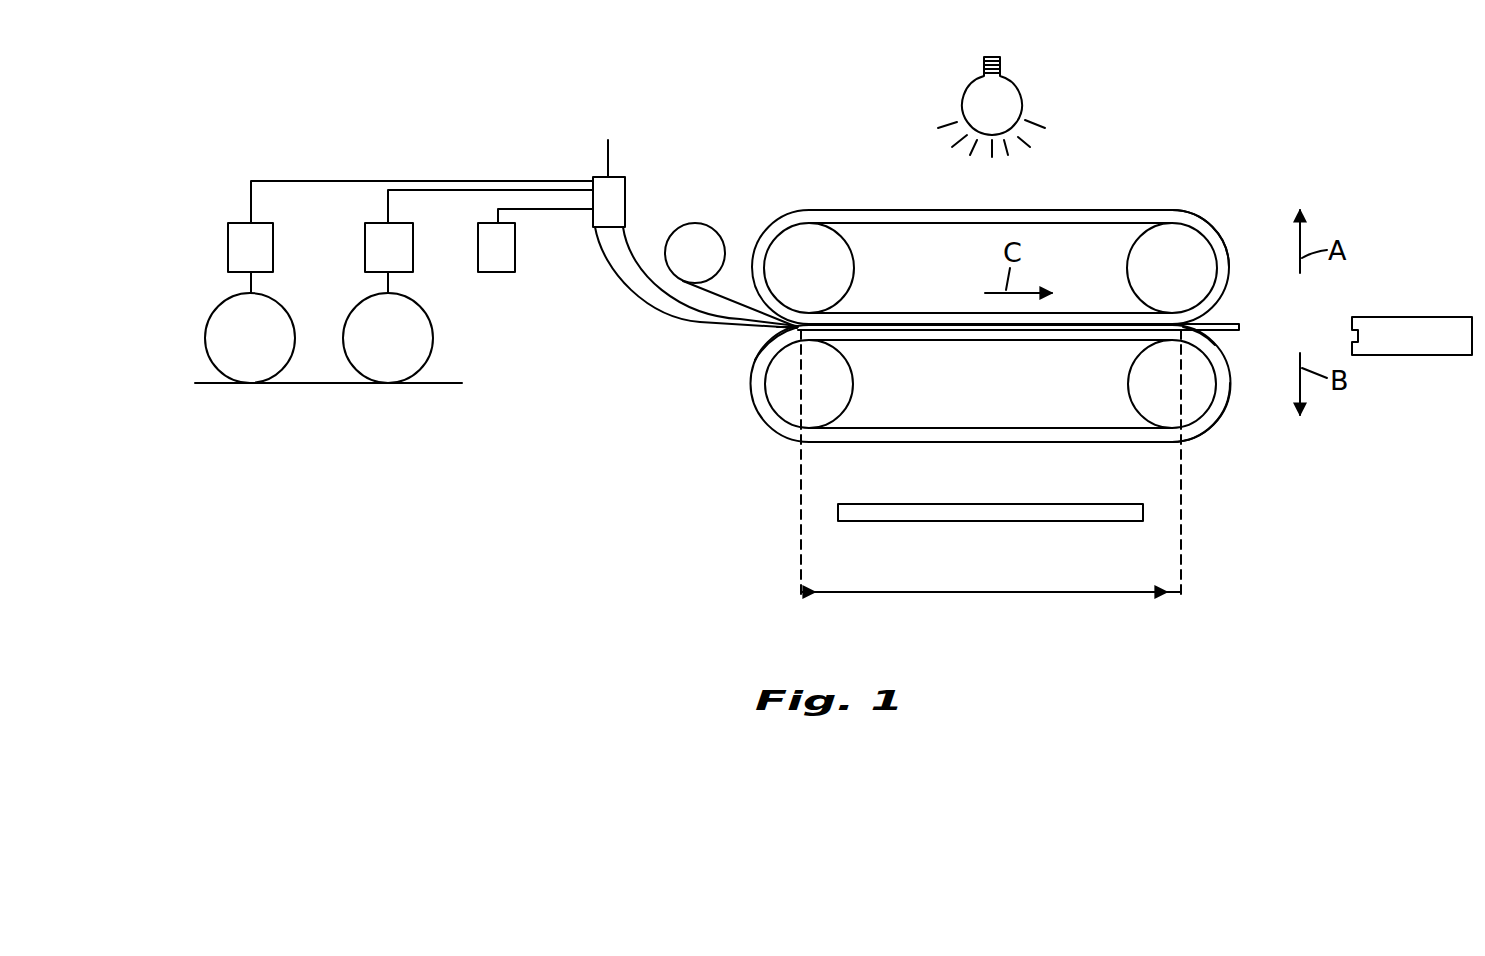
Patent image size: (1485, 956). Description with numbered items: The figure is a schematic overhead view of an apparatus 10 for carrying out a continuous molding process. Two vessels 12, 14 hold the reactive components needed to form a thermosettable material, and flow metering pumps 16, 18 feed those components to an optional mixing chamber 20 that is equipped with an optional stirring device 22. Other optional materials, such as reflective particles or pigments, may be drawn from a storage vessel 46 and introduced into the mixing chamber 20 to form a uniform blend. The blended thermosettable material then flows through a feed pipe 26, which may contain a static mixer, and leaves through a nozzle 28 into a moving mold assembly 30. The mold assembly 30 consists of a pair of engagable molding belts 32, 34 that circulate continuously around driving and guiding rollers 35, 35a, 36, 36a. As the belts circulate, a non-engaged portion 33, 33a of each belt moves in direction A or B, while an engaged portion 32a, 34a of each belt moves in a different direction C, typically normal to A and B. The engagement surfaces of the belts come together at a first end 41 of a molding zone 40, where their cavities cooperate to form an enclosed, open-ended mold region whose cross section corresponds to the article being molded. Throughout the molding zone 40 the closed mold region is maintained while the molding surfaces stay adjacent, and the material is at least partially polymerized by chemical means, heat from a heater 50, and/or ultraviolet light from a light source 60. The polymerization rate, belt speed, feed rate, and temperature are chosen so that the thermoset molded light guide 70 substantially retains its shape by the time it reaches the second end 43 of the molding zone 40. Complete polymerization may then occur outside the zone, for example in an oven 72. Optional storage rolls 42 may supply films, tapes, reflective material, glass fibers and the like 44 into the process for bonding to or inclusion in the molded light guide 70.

The apparatus 10 is at (323, 136).
The vessel 12 is at (218, 330).
The vessel 14 is at (425, 340).
The flow metering pump 16 is at (228, 244).
The flow metering pump 18 is at (405, 262).
The mixing chamber 20 is at (620, 188).
The stirring device 22 is at (608, 152).
The feed pipe 26 is at (627, 298).
The nozzle 28 is at (777, 327).
The mold assembly 30 is at (1195, 192).
The molding belt 32 is at (1093, 214).
The engaged portion 32a is at (928, 322).
The non-engaged portion 33 is at (1228, 248).
The non-engaged portion 33a is at (1227, 412).
The molding belt 34 is at (1188, 433).
The engaged portion 34a is at (988, 330).
The roller 35 is at (848, 375).
The roller 35a is at (1135, 380).
The roller 36 is at (840, 253).
The roller 36a is at (1135, 260).
The molding zone 40 is at (990, 593).
The first end 41 is at (797, 328).
The storage roll 42 is at (690, 226).
The second end 43 is at (1190, 333).
The films, tapes, reflective material, glass fibers and the like 44 is at (727, 303).
The storage vessel 46 is at (512, 255).
The heater 50 is at (995, 515).
The light source 60 is at (973, 95).
The thermoset molded light guide 70 is at (1233, 322).
The oven 72 is at (1412, 317).